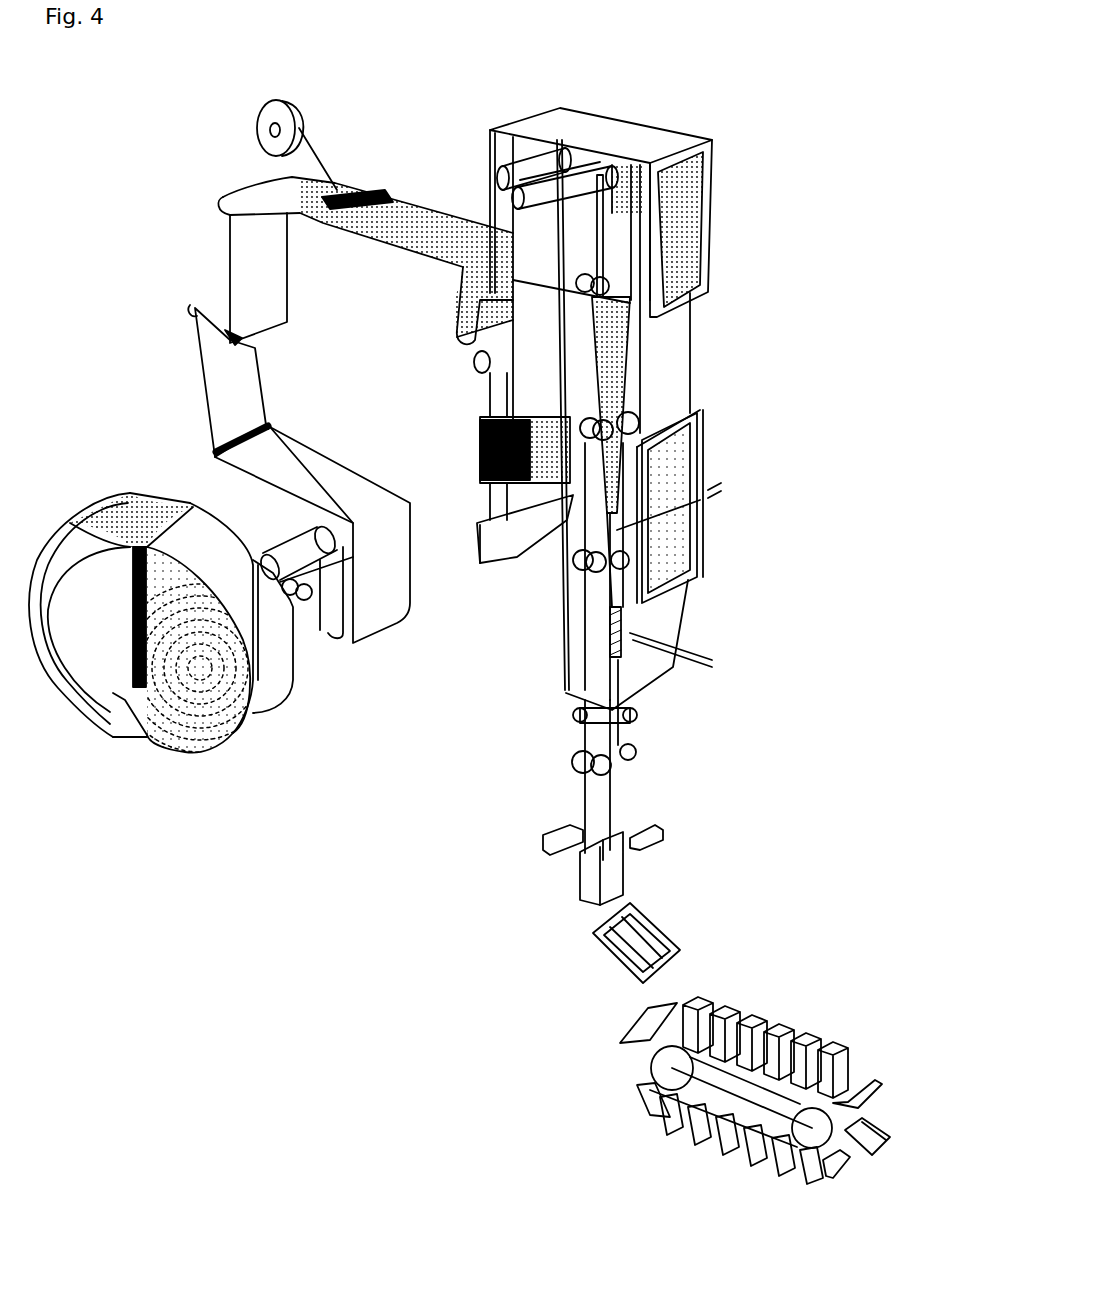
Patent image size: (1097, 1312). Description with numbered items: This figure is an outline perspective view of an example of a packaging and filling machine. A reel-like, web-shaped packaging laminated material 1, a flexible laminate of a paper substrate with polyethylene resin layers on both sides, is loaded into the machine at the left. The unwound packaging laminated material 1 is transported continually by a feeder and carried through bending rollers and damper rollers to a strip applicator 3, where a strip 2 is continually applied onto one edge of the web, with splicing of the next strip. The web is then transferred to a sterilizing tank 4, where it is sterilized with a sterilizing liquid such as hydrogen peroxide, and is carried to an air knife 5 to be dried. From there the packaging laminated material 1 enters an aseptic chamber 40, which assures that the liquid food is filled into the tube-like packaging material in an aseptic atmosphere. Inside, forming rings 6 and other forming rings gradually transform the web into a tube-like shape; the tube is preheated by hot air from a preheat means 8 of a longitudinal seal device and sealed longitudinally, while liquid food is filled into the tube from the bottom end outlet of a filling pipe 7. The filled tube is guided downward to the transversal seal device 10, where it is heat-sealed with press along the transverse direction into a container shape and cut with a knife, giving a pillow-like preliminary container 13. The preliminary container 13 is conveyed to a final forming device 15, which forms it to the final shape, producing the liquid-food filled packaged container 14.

The packaging laminated material 1 is at (152, 733).
The strip 2 is at (320, 158).
The strip applicator 3 is at (353, 190).
The sterilizing tank 4 is at (498, 567).
The air knife 5 is at (580, 177).
The forming rings 6 is at (647, 420).
The filling pipe 7 is at (630, 527).
The preheat means 8 is at (620, 640).
The transversal seal device 10 is at (667, 827).
The preliminary container 13 is at (627, 943).
The packaged container 14 is at (843, 1047).
The final forming device 15 is at (643, 1050).
The aseptic chamber 40 is at (680, 347).